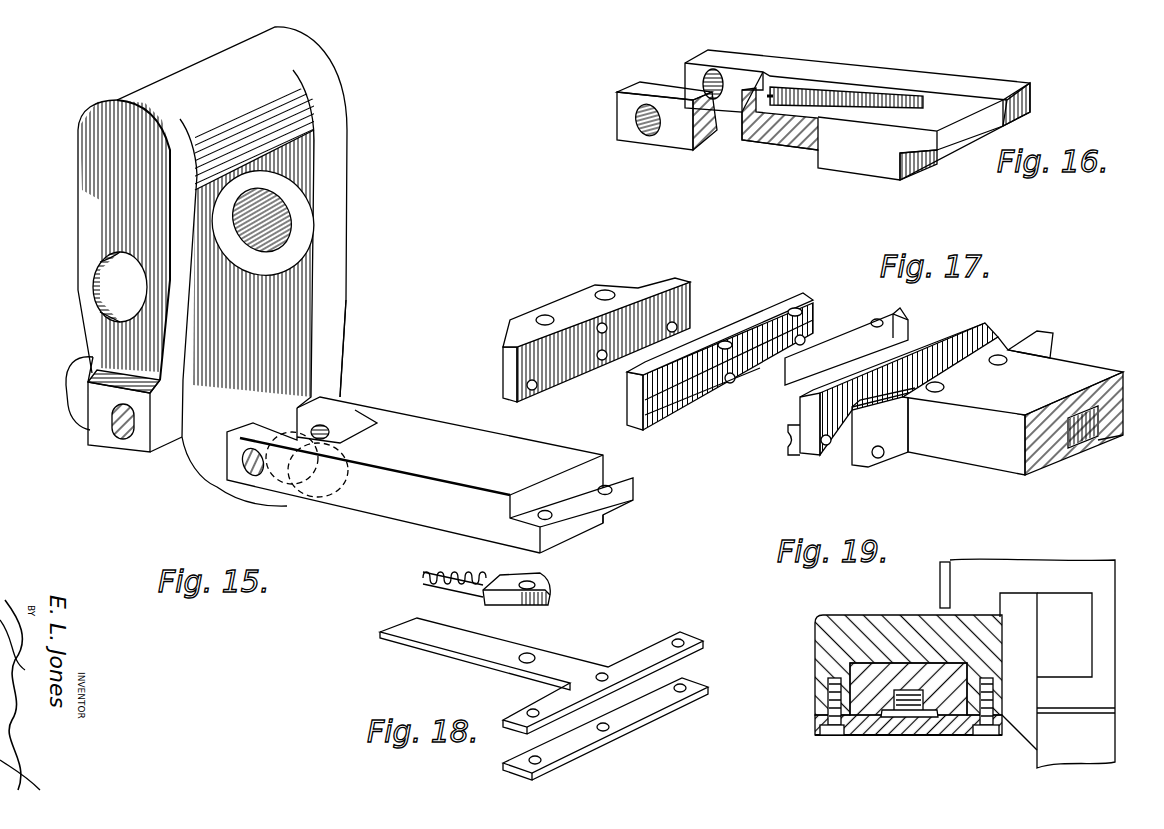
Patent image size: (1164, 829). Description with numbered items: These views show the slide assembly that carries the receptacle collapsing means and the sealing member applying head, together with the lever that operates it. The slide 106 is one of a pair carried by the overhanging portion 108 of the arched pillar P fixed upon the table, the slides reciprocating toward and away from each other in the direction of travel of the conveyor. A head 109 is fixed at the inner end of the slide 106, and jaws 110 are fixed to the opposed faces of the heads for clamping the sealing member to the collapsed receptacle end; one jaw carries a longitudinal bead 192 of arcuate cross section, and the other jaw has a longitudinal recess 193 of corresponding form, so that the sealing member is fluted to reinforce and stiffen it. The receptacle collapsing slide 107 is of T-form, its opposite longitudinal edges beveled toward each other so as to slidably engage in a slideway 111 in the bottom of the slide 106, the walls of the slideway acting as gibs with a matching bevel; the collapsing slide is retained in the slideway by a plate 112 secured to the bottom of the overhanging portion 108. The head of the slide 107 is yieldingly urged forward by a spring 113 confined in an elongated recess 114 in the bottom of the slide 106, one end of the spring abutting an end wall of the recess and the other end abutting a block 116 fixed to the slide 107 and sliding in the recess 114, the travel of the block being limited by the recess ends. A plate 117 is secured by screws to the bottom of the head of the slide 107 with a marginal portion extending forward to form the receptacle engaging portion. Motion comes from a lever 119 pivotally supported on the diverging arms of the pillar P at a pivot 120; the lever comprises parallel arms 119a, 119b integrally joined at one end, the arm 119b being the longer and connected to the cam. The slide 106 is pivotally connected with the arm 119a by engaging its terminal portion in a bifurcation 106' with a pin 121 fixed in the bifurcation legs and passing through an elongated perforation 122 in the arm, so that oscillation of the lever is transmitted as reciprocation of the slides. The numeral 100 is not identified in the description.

In FIG. 17, the bar 100 is at (905, 325).
In FIG. 15, the slide 106 is at (430, 475).
In FIG. 16, the slide 106 is at (857, 125).
In FIG. 17, the slide 106 is at (1013, 417).
In FIG. 19, the slide 106 is at (907, 722).
In FIG. 15, the bifurcation 106' is at (357, 406).
In FIG. 16, the bifurcation 106' is at (782, 70).
In FIG. 18, the receptacle collapsing slide 107 is at (480, 640).
In FIG. 19, the receptacle collapsing slide 107 is at (940, 722).
In FIG. 19, the overhanging portion 108 is at (886, 615).
In FIG. 17, the head 109 is at (556, 305).
In FIG. 17, the jaw 110 is at (640, 398).
In FIG. 15, the slideway 111 is at (585, 525).
In FIG. 16, the slideway 111 is at (1005, 112).
In FIG. 17, the slideway 111 is at (1100, 442).
In FIG. 18, the slideway 111 is at (606, 561).
In FIG. 19, the plate 112 is at (815, 735).
In FIG. 18, the spring 113 is at (455, 598).
In FIG. 16, the elongated recess 114 is at (905, 95).
In FIG. 17, the elongated recess 114 is at (1085, 440).
In FIG. 18, the block 116 is at (552, 598).
In FIG. 19, the block 116 is at (893, 722).
In FIG. 18, the plate 117 is at (625, 722).
In FIG. 15, the lever 119 is at (90, 120).
In FIG. 15, the lever arm 119a is at (100, 338).
In FIG. 15, the lever arm 119b is at (330, 265).
In FIG. 15, the pivot 120 is at (105, 292).
In FIG. 15, the pin 121 is at (295, 490).
In FIG. 15, the elongated perforation 122 is at (128, 430).
In FIG. 17, the bead 192 is at (680, 420).
In FIG. 17, the longitudinal recess 193 is at (790, 440).
In FIG. 19, the pillar P is at (1027, 663).